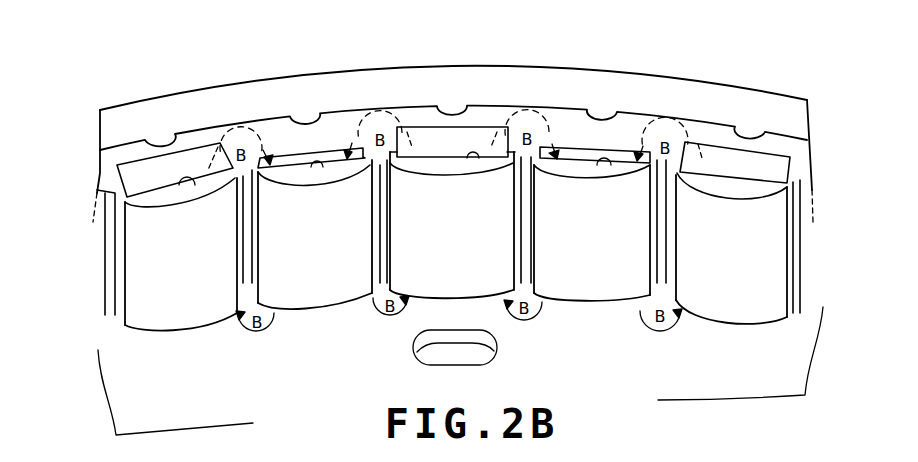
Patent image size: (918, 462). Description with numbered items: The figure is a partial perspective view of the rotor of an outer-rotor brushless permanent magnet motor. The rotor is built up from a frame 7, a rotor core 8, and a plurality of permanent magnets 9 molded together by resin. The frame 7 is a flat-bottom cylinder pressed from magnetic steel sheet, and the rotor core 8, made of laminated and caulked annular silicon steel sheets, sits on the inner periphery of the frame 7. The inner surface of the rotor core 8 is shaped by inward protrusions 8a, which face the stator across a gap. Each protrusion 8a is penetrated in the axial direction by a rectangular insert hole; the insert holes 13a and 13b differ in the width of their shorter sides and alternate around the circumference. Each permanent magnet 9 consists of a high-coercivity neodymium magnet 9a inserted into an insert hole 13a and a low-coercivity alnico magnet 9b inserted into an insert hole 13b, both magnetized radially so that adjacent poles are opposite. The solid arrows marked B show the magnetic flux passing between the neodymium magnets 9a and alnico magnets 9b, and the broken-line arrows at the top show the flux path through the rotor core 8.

The frame 7 is at (607, 71).
The rotor core 8 is at (678, 118).
The protrusions 8a is at (170, 283).
The permanent magnet 9 is at (183, 49).
The neodymium magnet 9a is at (280, 147).
The alnico magnet 9b is at (197, 147).
The insert hole 13a is at (325, 167).
The insert hole 13b is at (197, 186).